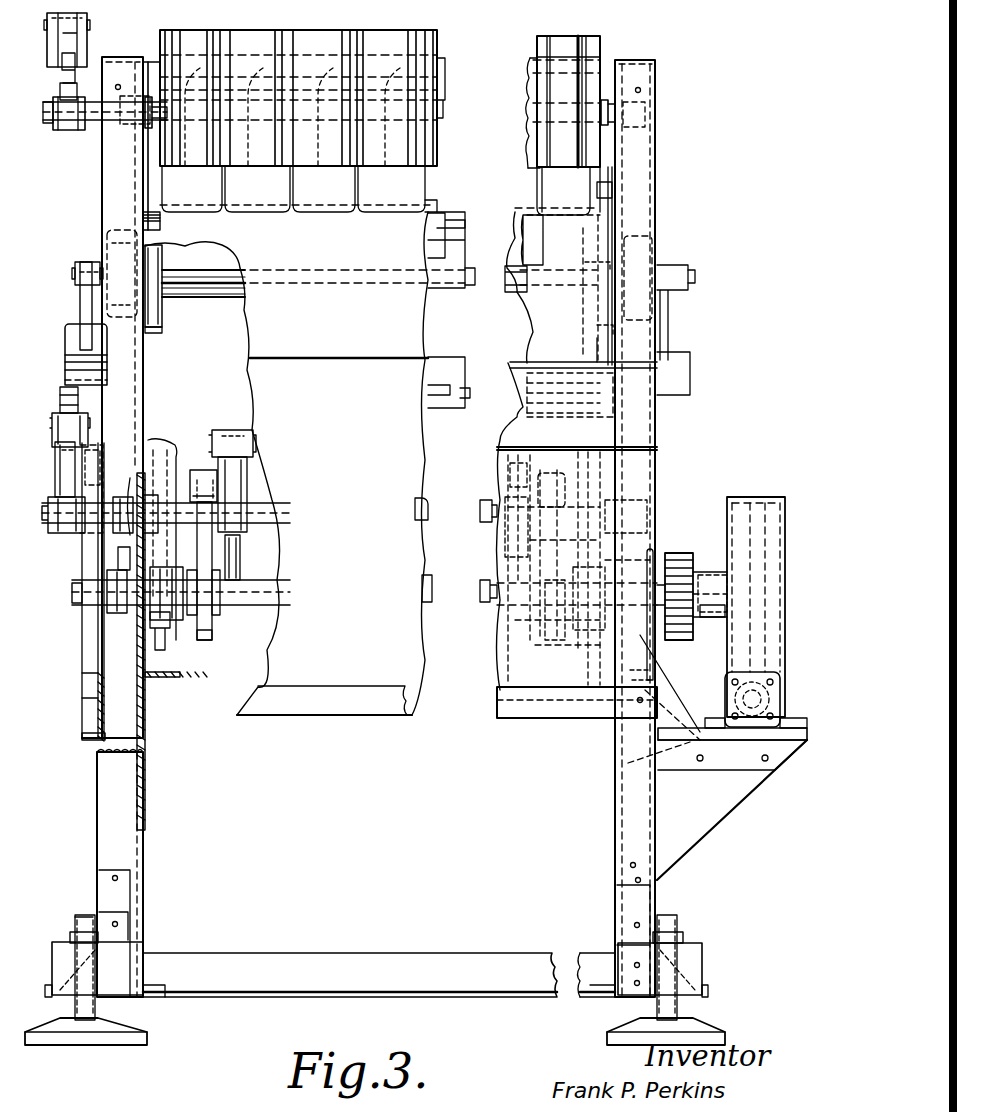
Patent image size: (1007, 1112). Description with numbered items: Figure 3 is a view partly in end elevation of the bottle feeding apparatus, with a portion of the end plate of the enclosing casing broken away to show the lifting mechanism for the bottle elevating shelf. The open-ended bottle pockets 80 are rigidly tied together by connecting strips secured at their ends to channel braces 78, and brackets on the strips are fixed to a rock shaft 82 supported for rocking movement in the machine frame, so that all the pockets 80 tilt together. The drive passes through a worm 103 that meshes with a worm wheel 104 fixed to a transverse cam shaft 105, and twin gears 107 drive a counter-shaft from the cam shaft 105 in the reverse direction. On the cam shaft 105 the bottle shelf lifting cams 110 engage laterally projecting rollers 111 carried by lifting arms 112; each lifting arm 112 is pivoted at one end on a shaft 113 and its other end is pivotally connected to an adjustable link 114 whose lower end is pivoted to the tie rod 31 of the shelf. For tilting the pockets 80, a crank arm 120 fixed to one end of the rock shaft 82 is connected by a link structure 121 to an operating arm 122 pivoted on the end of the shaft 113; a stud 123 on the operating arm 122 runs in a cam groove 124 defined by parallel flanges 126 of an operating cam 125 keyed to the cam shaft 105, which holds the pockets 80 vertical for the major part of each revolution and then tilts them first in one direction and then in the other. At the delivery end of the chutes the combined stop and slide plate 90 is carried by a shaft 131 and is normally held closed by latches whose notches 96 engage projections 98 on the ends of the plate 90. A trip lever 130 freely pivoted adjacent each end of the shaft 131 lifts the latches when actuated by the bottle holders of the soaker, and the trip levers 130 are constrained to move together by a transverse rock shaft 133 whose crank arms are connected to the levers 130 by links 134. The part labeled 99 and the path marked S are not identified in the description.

The tie rod 31 is at (480, 600).
The channel brace 78 is at (168, 40).
The bottle pocket 80 is at (392, 42).
The rock shaft 82 is at (95, 102).
The trip plate 90 is at (200, 256).
The notch 96 is at (146, 215).
The projection 98 is at (155, 222).
The bracket 99 is at (446, 208).
The worm 103 is at (758, 712).
The worm wheel 104 is at (765, 525).
The cam shaft 105 is at (265, 595).
The twin gears 107 is at (678, 555).
The bottle shelf lifting cam 110 is at (205, 640).
The roller 111 is at (205, 468).
The lifting arm 112 is at (240, 472).
The shaft 113 is at (482, 508).
The adjustable link 114 is at (240, 565).
The crank arm 120 is at (58, 120).
The link structure 121 is at (62, 70).
The operating arm 122 is at (52, 438).
The stud 123 is at (72, 462).
The cam groove 124 is at (88, 740).
The operating cam 125 is at (125, 724).
The parallel flanges 126 is at (92, 735).
The trip lever 130 is at (602, 248).
The shaft 131 is at (202, 292).
The transverse rock shaft 133 is at (68, 348).
The link 134 is at (158, 331).
The seed path S is at (355, 218).